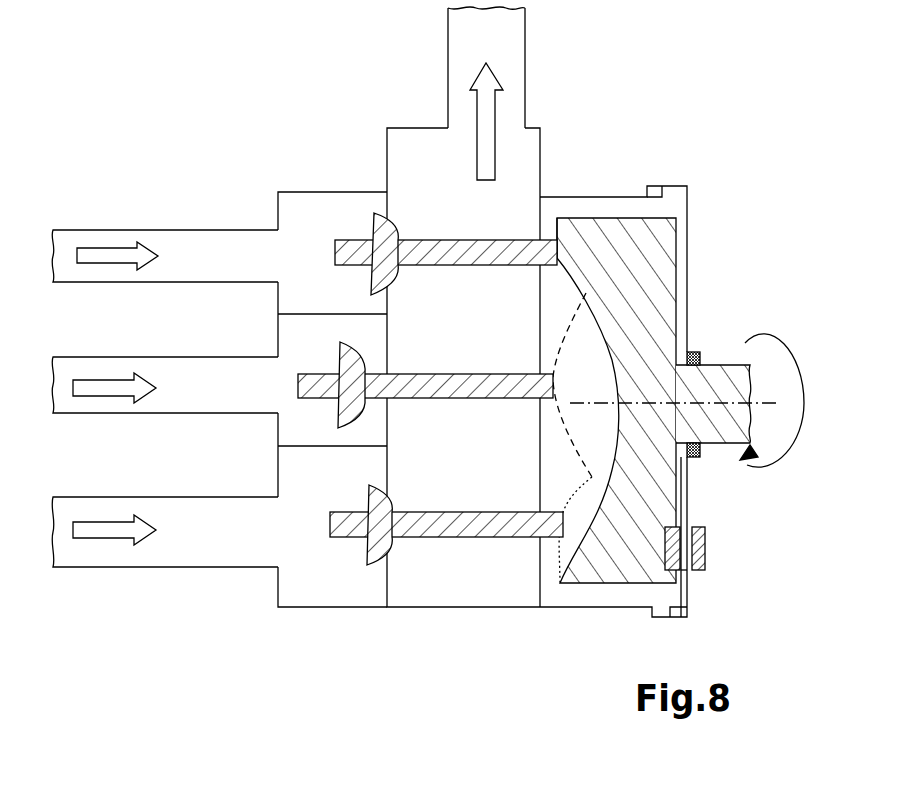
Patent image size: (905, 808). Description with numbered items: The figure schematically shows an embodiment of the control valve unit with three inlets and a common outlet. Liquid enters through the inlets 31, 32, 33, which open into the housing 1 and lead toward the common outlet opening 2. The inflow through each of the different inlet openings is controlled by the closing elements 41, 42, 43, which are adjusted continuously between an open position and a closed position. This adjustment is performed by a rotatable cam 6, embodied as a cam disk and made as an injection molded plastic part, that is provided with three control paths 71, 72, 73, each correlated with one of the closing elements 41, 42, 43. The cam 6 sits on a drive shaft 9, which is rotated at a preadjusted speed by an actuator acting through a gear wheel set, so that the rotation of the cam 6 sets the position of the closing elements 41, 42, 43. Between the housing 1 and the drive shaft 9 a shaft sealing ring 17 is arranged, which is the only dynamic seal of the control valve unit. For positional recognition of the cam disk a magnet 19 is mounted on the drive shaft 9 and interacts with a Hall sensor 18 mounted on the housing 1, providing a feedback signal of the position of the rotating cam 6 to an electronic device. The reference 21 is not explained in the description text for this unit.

The housing 1 is at (590, 608).
The outlet opening 2 is at (508, 128).
The rotor unit 21 is at (661, 157).
The inlet 31 is at (277, 262).
The inlet 32 is at (277, 390).
The inlet 33 is at (280, 522).
The closing element 41 is at (375, 225).
The closing element 42 is at (338, 408).
The closing element 43 is at (363, 560).
The cam 6 is at (645, 243).
The control path 71 is at (555, 232).
The control path 72 is at (553, 415).
The control path 73 is at (560, 548).
The drive shaft 9 is at (712, 383).
The shaft sealing ring 17 is at (700, 456).
The Hall sensor 18 is at (705, 553).
The magnet 19 is at (683, 572).